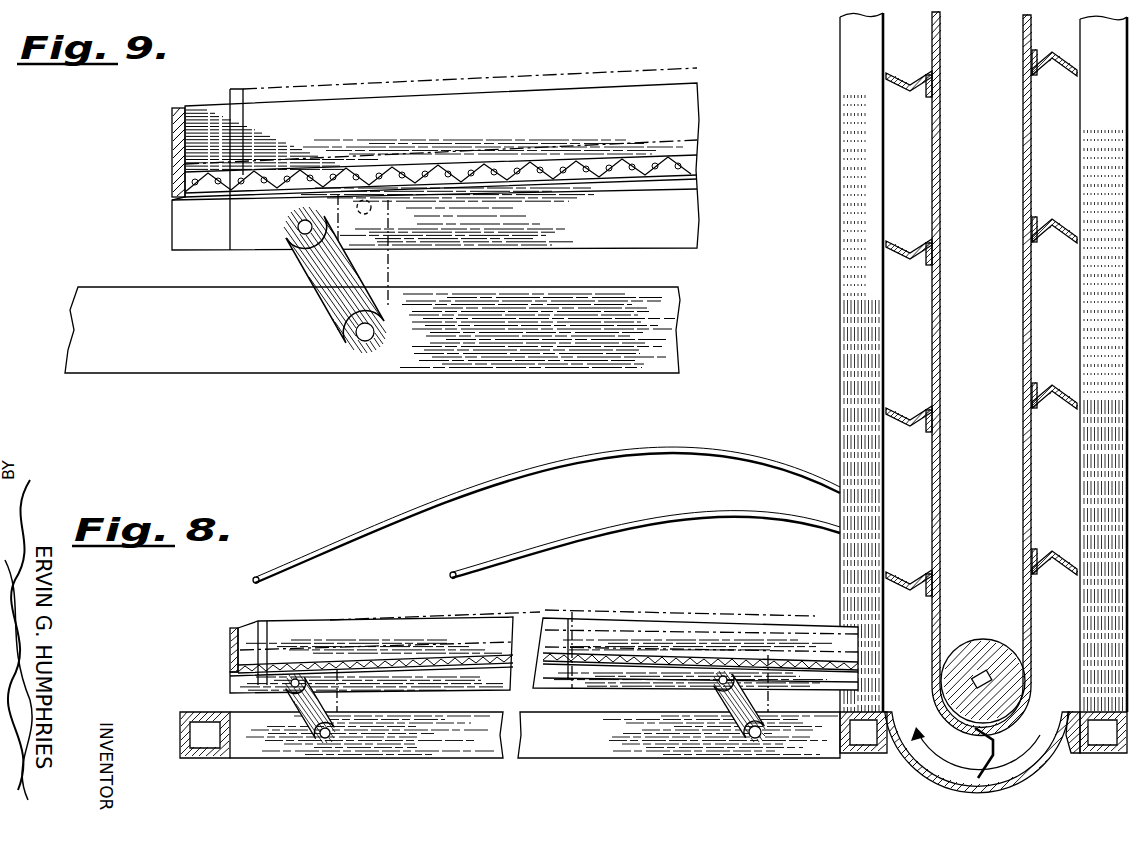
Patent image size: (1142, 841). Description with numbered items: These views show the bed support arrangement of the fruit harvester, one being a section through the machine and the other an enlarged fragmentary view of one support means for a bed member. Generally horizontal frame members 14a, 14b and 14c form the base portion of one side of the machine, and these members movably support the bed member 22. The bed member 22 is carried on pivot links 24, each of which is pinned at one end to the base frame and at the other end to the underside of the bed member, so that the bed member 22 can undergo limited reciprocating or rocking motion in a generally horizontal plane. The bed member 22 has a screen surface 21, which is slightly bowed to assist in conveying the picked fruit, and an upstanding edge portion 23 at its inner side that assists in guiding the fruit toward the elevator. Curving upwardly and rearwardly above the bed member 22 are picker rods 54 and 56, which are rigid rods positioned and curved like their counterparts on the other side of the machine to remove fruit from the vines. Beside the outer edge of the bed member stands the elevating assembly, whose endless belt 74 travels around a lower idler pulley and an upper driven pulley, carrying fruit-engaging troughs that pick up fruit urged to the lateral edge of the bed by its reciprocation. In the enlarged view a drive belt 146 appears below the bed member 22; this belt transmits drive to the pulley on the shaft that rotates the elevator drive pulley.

In FIG. 8, the horizontal frame member 14a is at (867, 753).
In FIG. 8, the horizontal frame member 14b is at (575, 743).
In FIG. 8, the horizontal frame member 14c is at (180, 733).
In FIG. 9, the screen surface 21 is at (664, 157).
In FIG. 8, the screen surface 21 is at (421, 657).
In FIG. 9, the bed member 22 is at (701, 95).
In FIG. 8, the bed member 22 is at (565, 603).
In FIG. 9, the upstanding edge portion 23 is at (172, 152).
In FIG. 8, the upstanding edge portion 23 is at (230, 647).
In FIG. 9, the pivot link 24 is at (308, 266).
In FIG. 8, the pivot link 24 is at (310, 700).
In FIG. 8, the picker rod 54 is at (340, 545).
In FIG. 8, the picker rod 56 is at (681, 526).
In FIG. 8, the endless belt 74 is at (1023, 472).
In FIG. 9, the drive belt 146 is at (233, 366).